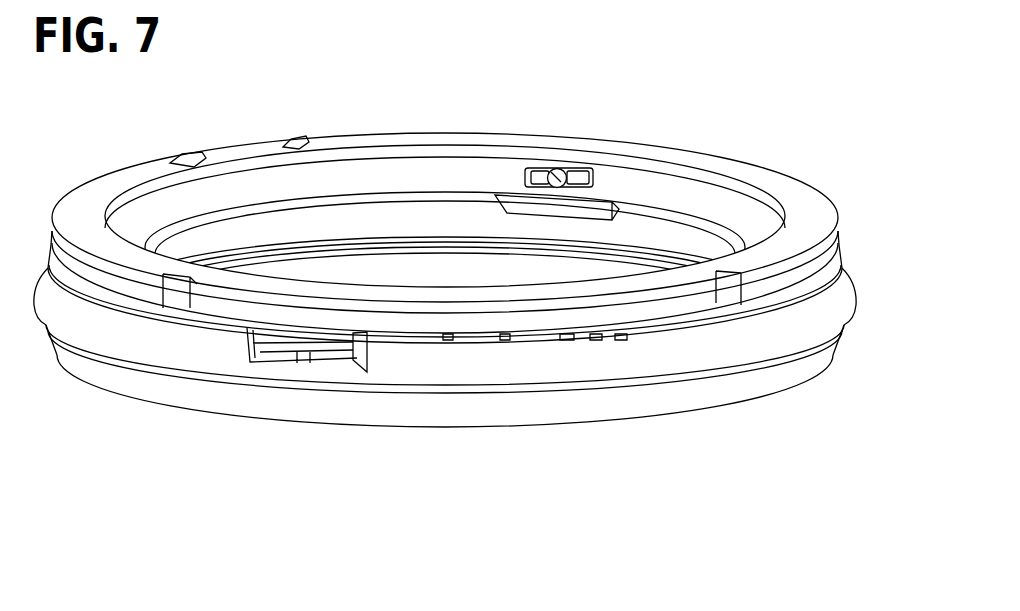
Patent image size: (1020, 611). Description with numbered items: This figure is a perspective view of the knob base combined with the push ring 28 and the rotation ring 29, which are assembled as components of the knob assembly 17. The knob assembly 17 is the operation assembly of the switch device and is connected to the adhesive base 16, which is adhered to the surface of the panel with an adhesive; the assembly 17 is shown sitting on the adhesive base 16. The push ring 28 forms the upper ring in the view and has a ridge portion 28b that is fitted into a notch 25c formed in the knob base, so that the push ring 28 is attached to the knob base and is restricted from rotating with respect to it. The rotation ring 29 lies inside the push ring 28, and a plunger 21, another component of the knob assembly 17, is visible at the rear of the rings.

The adhesive base 16 is at (479, 370).
The knob assembly 17 is at (488, 189).
The plunger 21 is at (549, 168).
The notch 25c is at (357, 360).
The push ring 28 is at (702, 150).
The ridge portion 28b is at (282, 323).
The rotation ring 29 is at (445, 249).